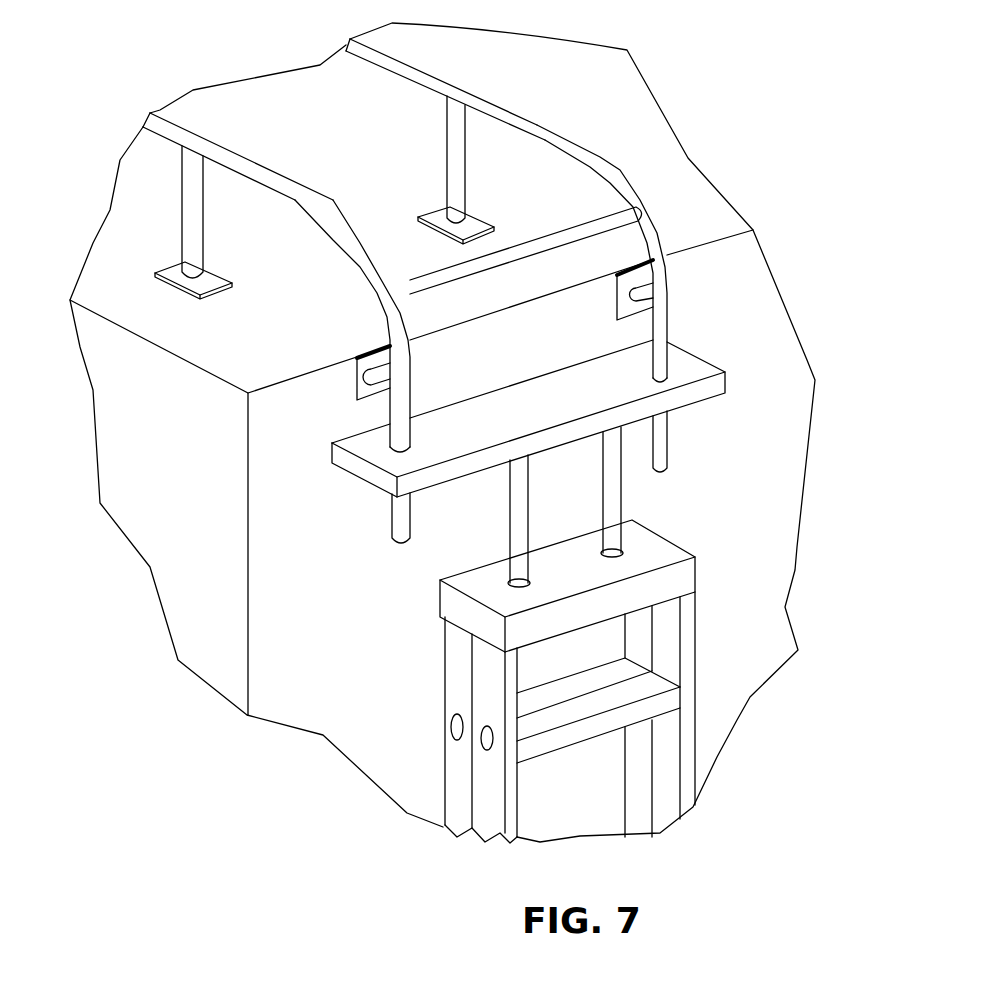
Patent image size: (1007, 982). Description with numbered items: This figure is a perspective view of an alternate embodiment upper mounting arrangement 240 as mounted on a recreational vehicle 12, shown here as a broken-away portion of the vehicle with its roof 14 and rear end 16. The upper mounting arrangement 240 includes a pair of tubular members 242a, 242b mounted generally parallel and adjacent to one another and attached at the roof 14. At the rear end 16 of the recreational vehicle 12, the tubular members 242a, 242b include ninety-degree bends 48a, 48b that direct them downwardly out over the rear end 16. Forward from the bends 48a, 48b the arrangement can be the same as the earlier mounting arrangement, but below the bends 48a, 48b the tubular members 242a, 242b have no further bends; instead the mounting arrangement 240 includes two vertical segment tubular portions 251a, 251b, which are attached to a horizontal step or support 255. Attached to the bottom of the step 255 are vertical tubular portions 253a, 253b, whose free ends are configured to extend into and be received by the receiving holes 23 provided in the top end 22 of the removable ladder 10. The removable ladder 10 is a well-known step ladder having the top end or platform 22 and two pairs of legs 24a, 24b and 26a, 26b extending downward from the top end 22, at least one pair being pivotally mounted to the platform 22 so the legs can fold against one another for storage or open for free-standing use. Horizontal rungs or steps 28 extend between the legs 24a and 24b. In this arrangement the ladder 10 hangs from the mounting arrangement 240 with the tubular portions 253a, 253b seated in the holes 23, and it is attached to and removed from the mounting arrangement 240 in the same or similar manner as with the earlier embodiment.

The removable ladder 10 is at (726, 556).
The recreational vehicle 12 is at (779, 474).
The roof 14 is at (143, 192).
The rear end 16 is at (772, 660).
The top end 22 is at (642, 535).
The receiving holes 23 is at (624, 555).
The leg 24a is at (487, 770).
The leg 24b is at (670, 652).
The leg 26a is at (457, 687).
The leg 26b is at (640, 629).
The rungs 28 is at (643, 713).
The upper mounting arrangement 240 is at (684, 181).
The tubular member 242a is at (253, 172).
The tubular member 242b is at (433, 80).
The 90° bend 48a is at (363, 240).
The 90° bend 48b is at (598, 161).
The vertical segment tubular portion 251a is at (397, 405).
The vertical segment tubular portion 251b is at (658, 325).
The vertical tubular portion 253a is at (513, 530).
The vertical tubular portion 253b is at (621, 469).
The horizontal step 255 is at (543, 392).